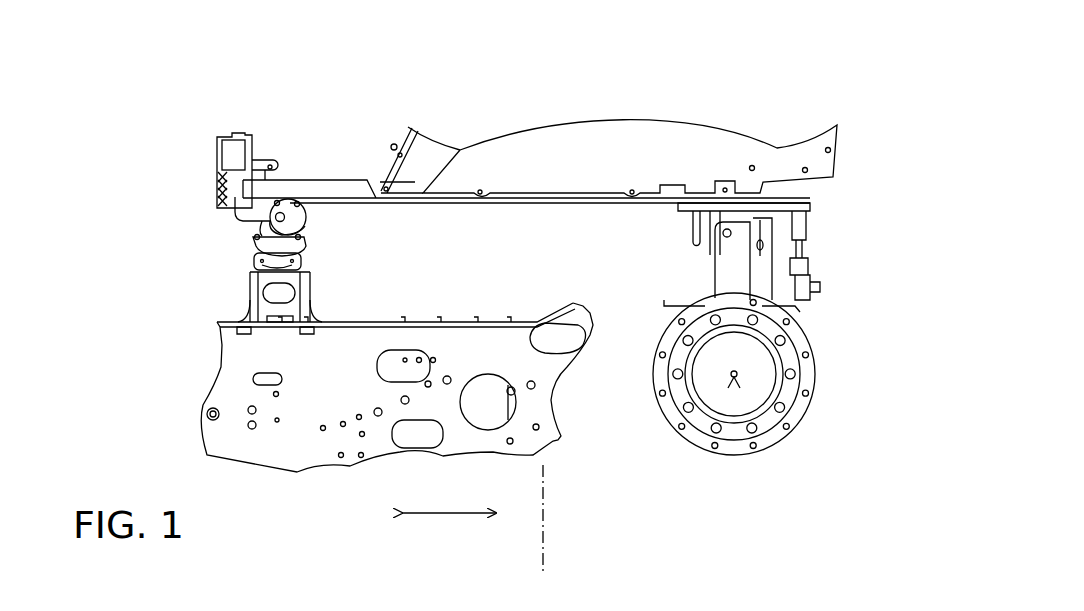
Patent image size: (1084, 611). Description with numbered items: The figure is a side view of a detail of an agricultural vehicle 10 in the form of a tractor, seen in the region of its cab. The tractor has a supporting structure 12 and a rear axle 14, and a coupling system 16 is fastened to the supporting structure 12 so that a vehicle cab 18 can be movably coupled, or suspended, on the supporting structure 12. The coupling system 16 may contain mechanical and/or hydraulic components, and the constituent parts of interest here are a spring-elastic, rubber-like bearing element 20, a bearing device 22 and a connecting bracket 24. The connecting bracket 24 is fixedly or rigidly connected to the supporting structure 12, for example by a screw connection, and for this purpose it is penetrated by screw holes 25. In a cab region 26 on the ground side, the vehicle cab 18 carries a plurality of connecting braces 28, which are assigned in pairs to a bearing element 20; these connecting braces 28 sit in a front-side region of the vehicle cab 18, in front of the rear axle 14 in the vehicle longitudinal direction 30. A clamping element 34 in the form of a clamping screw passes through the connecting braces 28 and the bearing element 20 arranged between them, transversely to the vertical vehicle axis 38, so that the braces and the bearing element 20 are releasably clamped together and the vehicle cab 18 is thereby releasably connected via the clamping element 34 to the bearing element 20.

The agricultural vehicle 10 is at (552, 105).
The supporting structure 12 is at (307, 418).
The rear axle 14 is at (736, 380).
The coupling system 16 is at (228, 262).
The vehicle cab 18 is at (407, 130).
The bearing element 20 is at (309, 232).
The bearing device 22 is at (252, 242).
The connecting bracket 24 is at (307, 266).
The screw holes 25 is at (318, 318).
The cab region 26 is at (294, 177).
The connecting braces 28 is at (266, 157).
The vehicle longitudinal direction 30 is at (452, 514).
The clamping element 34 is at (283, 204).
The vertical vehicle axis 38 is at (545, 521).